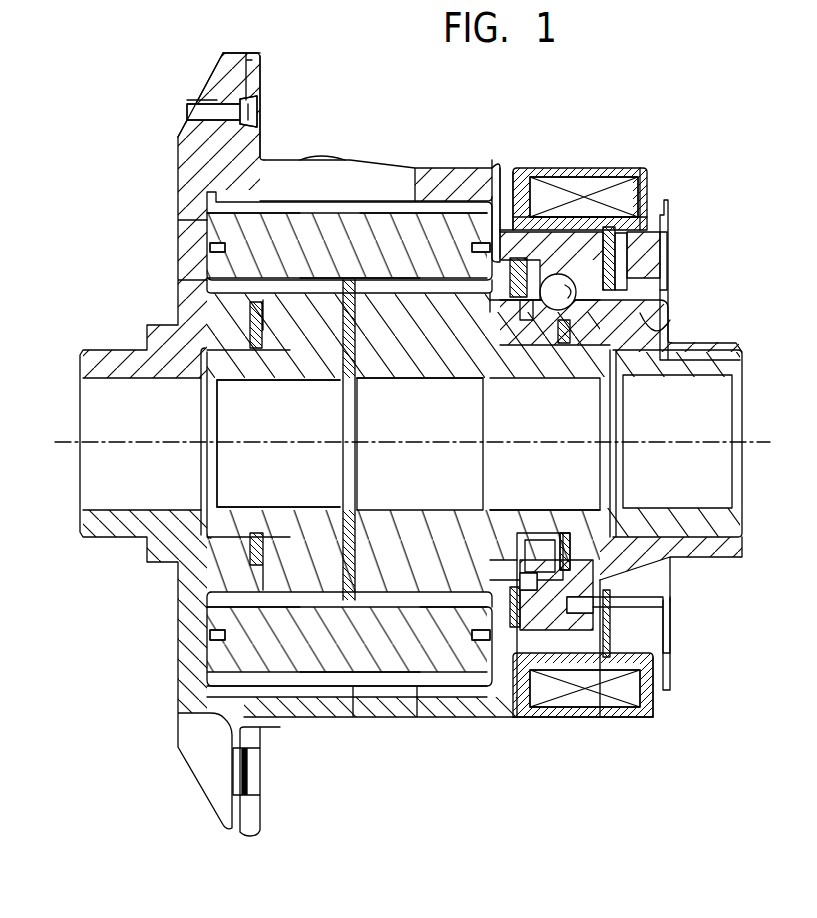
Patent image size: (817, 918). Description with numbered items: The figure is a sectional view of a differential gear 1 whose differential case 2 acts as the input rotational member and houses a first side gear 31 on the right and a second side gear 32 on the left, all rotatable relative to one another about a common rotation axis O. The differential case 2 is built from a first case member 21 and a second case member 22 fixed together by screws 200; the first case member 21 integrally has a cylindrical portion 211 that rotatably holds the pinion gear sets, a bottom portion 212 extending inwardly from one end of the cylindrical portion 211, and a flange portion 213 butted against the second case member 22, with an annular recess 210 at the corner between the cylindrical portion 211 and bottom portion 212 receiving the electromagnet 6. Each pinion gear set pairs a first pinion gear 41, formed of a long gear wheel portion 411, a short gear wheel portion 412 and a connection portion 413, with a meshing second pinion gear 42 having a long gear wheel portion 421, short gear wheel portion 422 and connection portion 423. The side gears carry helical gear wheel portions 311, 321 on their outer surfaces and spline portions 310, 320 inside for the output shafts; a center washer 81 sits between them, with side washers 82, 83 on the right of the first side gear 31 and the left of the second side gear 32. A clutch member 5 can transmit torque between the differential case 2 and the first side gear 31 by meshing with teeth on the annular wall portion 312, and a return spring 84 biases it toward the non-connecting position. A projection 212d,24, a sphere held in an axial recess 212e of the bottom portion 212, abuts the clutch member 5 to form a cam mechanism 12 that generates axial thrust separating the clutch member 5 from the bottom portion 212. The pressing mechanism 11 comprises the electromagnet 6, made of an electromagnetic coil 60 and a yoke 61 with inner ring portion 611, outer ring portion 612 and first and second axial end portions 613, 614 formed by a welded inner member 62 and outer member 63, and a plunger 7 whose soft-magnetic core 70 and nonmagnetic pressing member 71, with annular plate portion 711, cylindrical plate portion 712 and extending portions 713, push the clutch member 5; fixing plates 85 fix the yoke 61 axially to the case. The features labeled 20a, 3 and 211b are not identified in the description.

The differential gear 1 is at (158, 121).
The differential case 2 is at (304, 50).
The first case member 21 is at (253, 67).
The second case member 22 is at (225, 92).
The screws 200 is at (258, 112).
The flange portion 213 is at (250, 142).
The housing surface 20a is at (331, 195).
The cylindrical portion 211 is at (469, 172).
The annular wall portion 312 is at (500, 256).
The long gear wheel portion 411 is at (413, 227).
The connection portion 413 is at (338, 227).
The short gear wheel portion 412 is at (237, 230).
The first pinion gear 41 is at (206, 225).
The second pinion gear 42 is at (208, 660).
The yoke 61 is at (513, 112).
The first axial end portion 613 is at (527, 195).
The inner ring portion 611 is at (555, 225).
The outer ring portion 612 is at (600, 177).
The second axial end portion 614 is at (645, 190).
The pressing mechanism 11 is at (672, 192).
The plunger 7 is at (723, 232).
The magnetic material core 70 is at (657, 253).
The pressing member 71 is at (667, 263).
The axial recess 212e is at (556, 297).
The projection constituted by sphere 212d,24 is at (580, 300).
The bottom portion 212 is at (605, 318).
The rotation axis O is at (757, 440).
The clutch member 5 is at (673, 540).
The side washer 83 is at (260, 307).
The gear wheel portion 321 is at (313, 283).
The spline portion 320 is at (294, 507).
The center washer 81 is at (350, 347).
The gear wheel portion 311 is at (392, 287).
The cam mechanism 12 is at (550, 320).
The side washer 82 is at (564, 322).
The spline portion 310 is at (497, 507).
The return spring 84 is at (530, 567).
The second side gear 32 is at (277, 550).
The first side gear 31 is at (393, 557).
The shaft assembly 3 is at (206, 443).
The long gear wheel portion 421 is at (277, 665).
The connection portion 423 is at (387, 657).
The short gear wheel portion 422 is at (453, 657).
The annular recess 210 is at (512, 680).
The inner member 62 is at (515, 690).
The electromagnetic coil 60 is at (588, 710).
The outer member 63 is at (628, 718).
The housing flange 211b is at (648, 707).
The extending portions 713 is at (610, 602).
The cylindrical plate portion 712 is at (645, 607).
The annular plate portion 711 is at (668, 642).
The fixing plates 85 is at (570, 638).
The electromagnet 6 is at (667, 698).